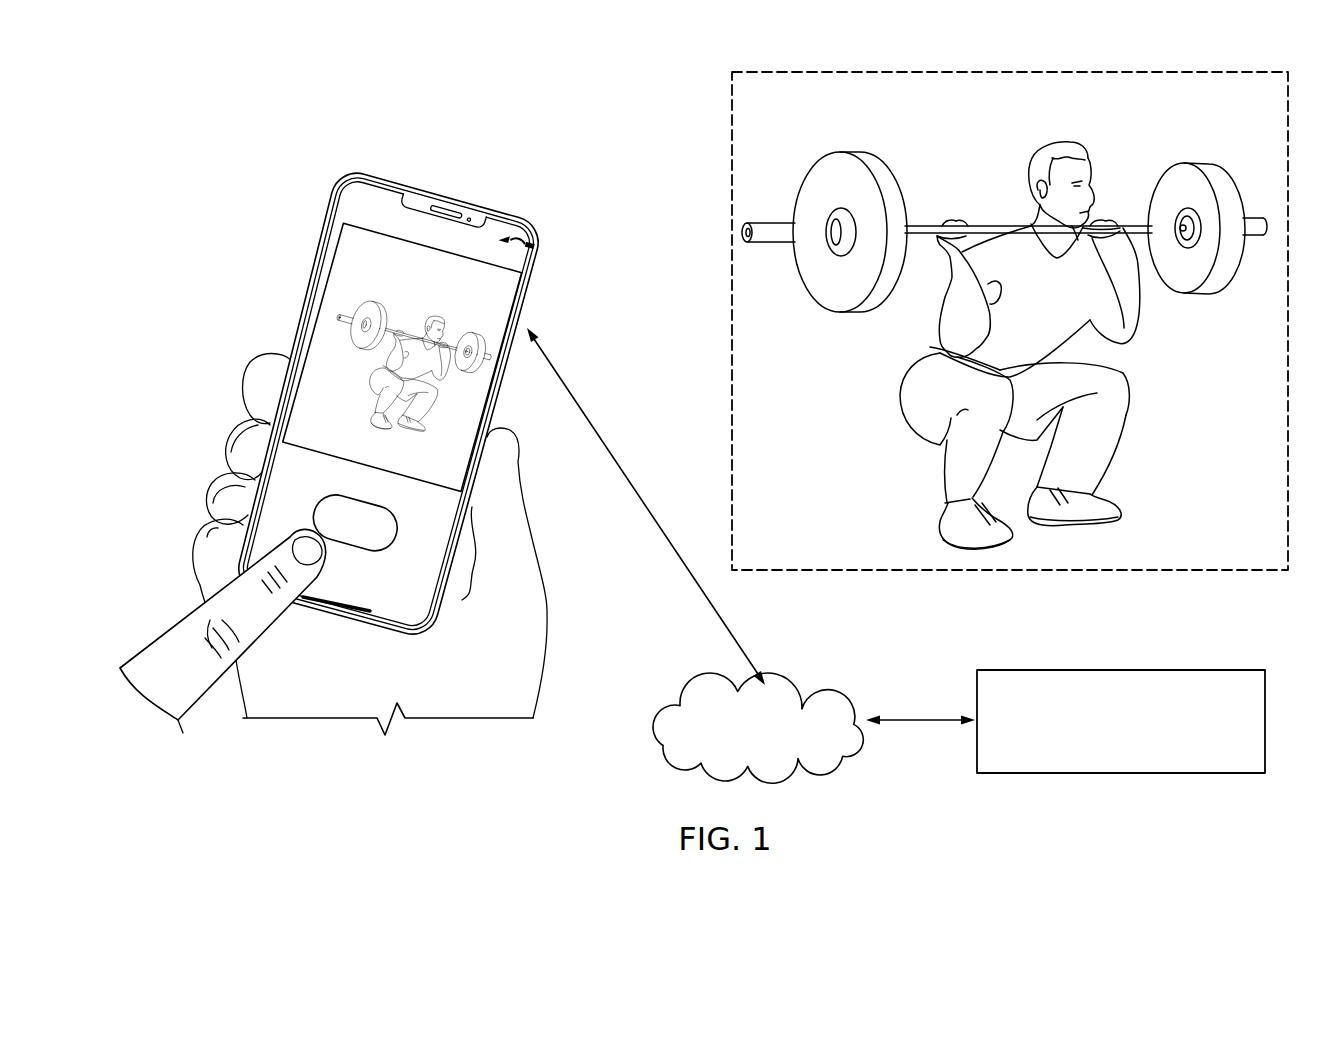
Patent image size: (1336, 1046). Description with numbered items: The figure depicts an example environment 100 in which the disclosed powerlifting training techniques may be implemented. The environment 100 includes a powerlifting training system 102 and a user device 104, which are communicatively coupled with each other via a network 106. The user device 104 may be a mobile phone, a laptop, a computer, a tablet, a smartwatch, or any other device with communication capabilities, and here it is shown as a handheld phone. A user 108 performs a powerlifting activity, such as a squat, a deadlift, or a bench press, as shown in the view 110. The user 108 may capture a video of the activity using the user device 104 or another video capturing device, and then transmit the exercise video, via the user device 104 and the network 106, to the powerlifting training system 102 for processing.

The environment 100 is at (212, 128).
The powerlifting training system 102 is at (1120, 670).
The user device 104 is at (305, 302).
The network 106 is at (813, 688).
The user 108 is at (1058, 140).
The view 110 is at (732, 126).